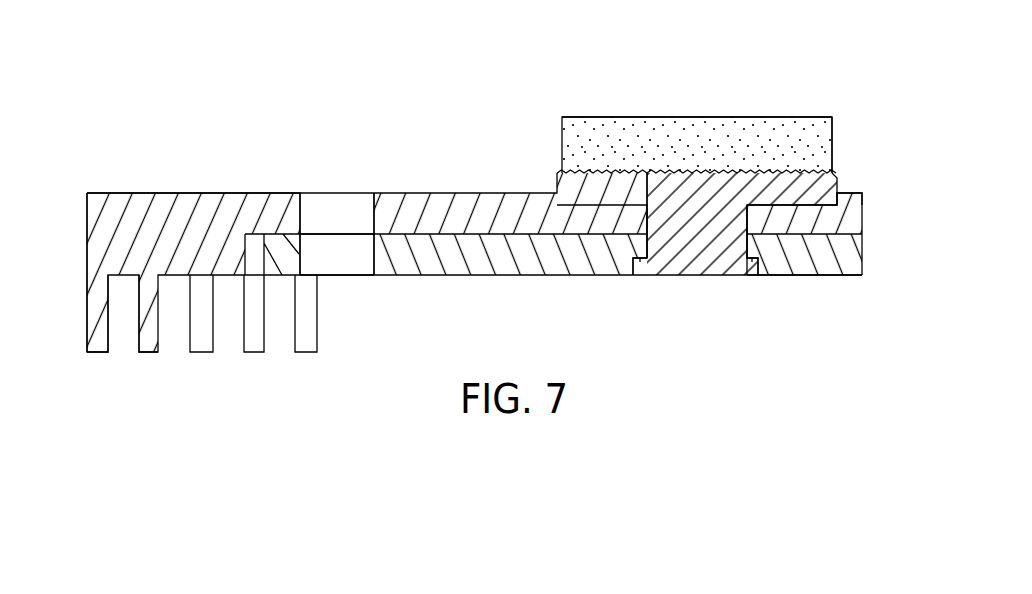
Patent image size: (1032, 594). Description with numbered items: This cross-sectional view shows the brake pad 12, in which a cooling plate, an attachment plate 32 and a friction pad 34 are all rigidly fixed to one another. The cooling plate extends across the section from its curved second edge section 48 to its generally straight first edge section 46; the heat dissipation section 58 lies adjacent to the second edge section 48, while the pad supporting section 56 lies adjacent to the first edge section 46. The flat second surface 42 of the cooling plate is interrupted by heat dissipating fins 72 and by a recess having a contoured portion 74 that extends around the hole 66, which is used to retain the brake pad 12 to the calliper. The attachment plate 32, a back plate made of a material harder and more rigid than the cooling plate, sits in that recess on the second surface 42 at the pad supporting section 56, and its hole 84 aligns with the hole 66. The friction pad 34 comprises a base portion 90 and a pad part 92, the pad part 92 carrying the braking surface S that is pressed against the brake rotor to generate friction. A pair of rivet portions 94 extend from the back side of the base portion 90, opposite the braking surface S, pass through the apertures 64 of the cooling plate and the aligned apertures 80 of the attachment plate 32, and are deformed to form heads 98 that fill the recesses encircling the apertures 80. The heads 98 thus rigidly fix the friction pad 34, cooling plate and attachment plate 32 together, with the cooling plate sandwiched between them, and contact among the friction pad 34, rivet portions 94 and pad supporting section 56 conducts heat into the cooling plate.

The brake pad 12 is at (250, 57).
The second edge section 48 is at (87, 218).
The heat dissipation section 58 is at (188, 188).
The hole 66 is at (373, 212).
The hole 84 is at (373, 253).
The attachment plate 32 is at (500, 258).
The heat dissipating fins 72 is at (150, 342).
The contoured portion 74 is at (282, 236).
The friction pad 34 is at (518, 78).
The pad part 92 is at (595, 135).
The base portion 90 is at (562, 187).
The braking surface S is at (725, 116).
The pad supporting section 56 is at (852, 186).
The first edge section 46 is at (863, 210).
The apertures 64 is at (692, 223).
The rivet portions 94 is at (727, 241).
The apertures 80 is at (650, 238).
The deformed heads 98 is at (643, 270).
The second surface 42 is at (826, 262).